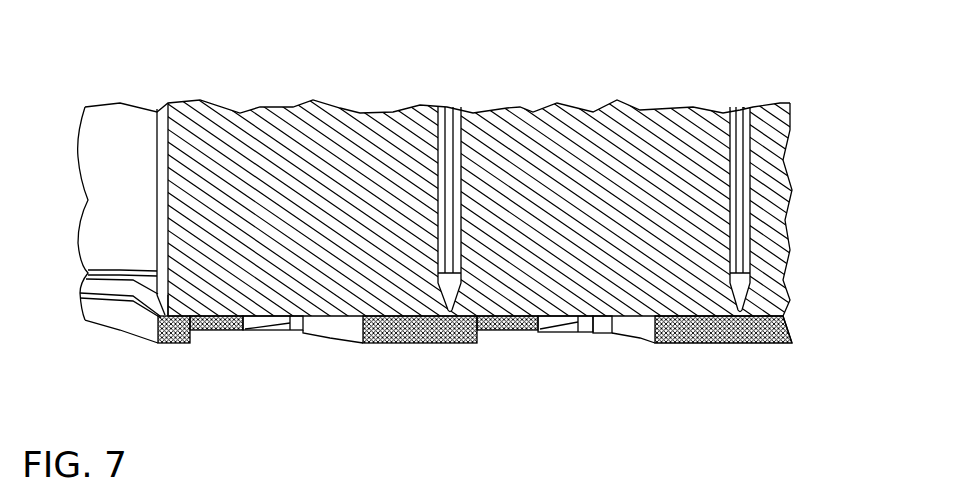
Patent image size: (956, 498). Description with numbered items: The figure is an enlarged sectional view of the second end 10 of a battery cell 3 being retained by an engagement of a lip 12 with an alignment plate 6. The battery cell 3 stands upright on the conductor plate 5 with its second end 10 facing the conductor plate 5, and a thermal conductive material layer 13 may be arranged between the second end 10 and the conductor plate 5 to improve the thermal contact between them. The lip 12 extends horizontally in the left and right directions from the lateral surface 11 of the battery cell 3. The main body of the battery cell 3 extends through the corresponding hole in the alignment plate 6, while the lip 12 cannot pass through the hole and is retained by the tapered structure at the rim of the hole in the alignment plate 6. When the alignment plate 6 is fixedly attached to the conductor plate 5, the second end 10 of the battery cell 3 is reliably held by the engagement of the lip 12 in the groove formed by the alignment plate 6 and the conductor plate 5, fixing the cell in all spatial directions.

The battery cell 3 is at (628, 152).
The lateral surface 11 is at (463, 163).
The alignment plate 6 is at (745, 285).
The lip 12 is at (476, 338).
The second end 10 is at (607, 333).
The conductor plate 5 is at (738, 332).
The thermal conductive material layer 13 is at (790, 325).